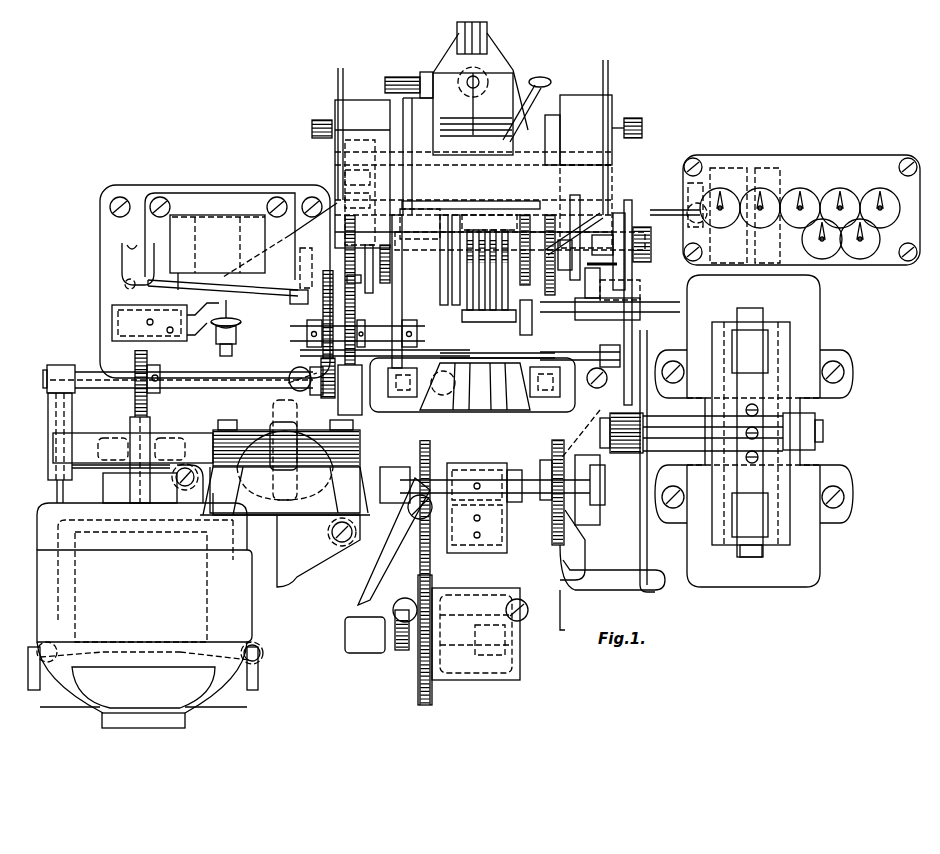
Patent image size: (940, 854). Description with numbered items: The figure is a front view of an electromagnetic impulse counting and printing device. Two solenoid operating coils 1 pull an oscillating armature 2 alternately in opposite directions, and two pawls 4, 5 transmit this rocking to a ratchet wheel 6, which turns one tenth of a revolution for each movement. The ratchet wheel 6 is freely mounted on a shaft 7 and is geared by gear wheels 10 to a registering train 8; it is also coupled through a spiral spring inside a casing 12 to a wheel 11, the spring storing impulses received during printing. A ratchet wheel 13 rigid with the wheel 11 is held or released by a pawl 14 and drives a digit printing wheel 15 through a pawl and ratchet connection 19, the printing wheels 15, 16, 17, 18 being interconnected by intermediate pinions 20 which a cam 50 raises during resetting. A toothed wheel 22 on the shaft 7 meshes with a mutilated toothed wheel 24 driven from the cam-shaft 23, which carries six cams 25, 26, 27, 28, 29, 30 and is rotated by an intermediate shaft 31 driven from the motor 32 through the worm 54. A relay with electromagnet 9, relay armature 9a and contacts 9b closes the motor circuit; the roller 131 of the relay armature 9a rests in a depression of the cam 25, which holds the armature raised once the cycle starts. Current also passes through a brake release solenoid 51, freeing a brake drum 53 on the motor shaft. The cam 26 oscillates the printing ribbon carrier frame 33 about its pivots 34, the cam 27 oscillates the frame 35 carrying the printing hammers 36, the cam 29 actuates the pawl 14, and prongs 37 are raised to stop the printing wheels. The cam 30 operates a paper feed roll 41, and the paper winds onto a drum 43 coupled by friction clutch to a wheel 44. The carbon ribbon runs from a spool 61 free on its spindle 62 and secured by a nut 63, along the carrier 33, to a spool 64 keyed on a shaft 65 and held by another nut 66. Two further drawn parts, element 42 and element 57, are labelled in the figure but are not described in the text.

The operating coil 1 is at (754, 431).
The oscillating armature 2 is at (711, 432).
The pawl 4 is at (634, 322).
The pawl 5 is at (625, 400).
The ratchet wheel 6 is at (619, 213).
The shaft 7 is at (442, 260).
The registering train 8 is at (814, 170).
The electromagnet 9 is at (218, 281).
The relay armature 9a is at (296, 288).
The relay contacts 9b is at (226, 300).
The gear wheels 10 is at (643, 225).
The wheel 11 is at (580, 275).
The casing 12 is at (728, 175).
The ratchet wheel 13 is at (556, 238).
The pawl 14 is at (554, 285).
The digit printing wheel 15 is at (506, 256).
The printing wheel 16 is at (493, 256).
The printing wheel 17 is at (481, 256).
The printing wheel 18 is at (468, 256).
The pawl and ratchet connection 19 is at (529, 248).
The intermediate pinions 20 is at (494, 215).
The toothed wheel 22 is at (311, 314).
The cam-shaft 23 is at (357, 333).
The mutilated toothed wheel 24 is at (306, 244).
The cam 25 is at (305, 366).
The cam 26 is at (392, 303).
The cam 27 is at (403, 353).
The cam 28 is at (472, 378).
The cam 29 is at (575, 358).
The cam 30 is at (600, 305).
The intermediate shaft 31 is at (242, 380).
The motor 32 is at (194, 596).
The printing ribbon carrier frame 33 is at (357, 202).
The pivots 34 is at (357, 180).
The frame 35 is at (415, 404).
The printing hammers 36 is at (535, 317).
The prongs 37 is at (500, 309).
The paper feed roll 41 is at (497, 526).
The rack 42 is at (553, 445).
The drum 43 is at (472, 608).
The wheel 44 is at (418, 682).
The cam 50 is at (392, 275).
The brake release solenoid 51 is at (262, 414).
The brake drum 53 is at (178, 440).
The worm 54 is at (133, 416).
The rack 57 is at (346, 254).
The spool 61 is at (609, 68).
The spindle 62 is at (578, 171).
The nut 63 is at (639, 124).
The spool 64 is at (338, 78).
The shaft 65 is at (473, 174).
The nut 66 is at (311, 129).
The roller 131 is at (298, 298).